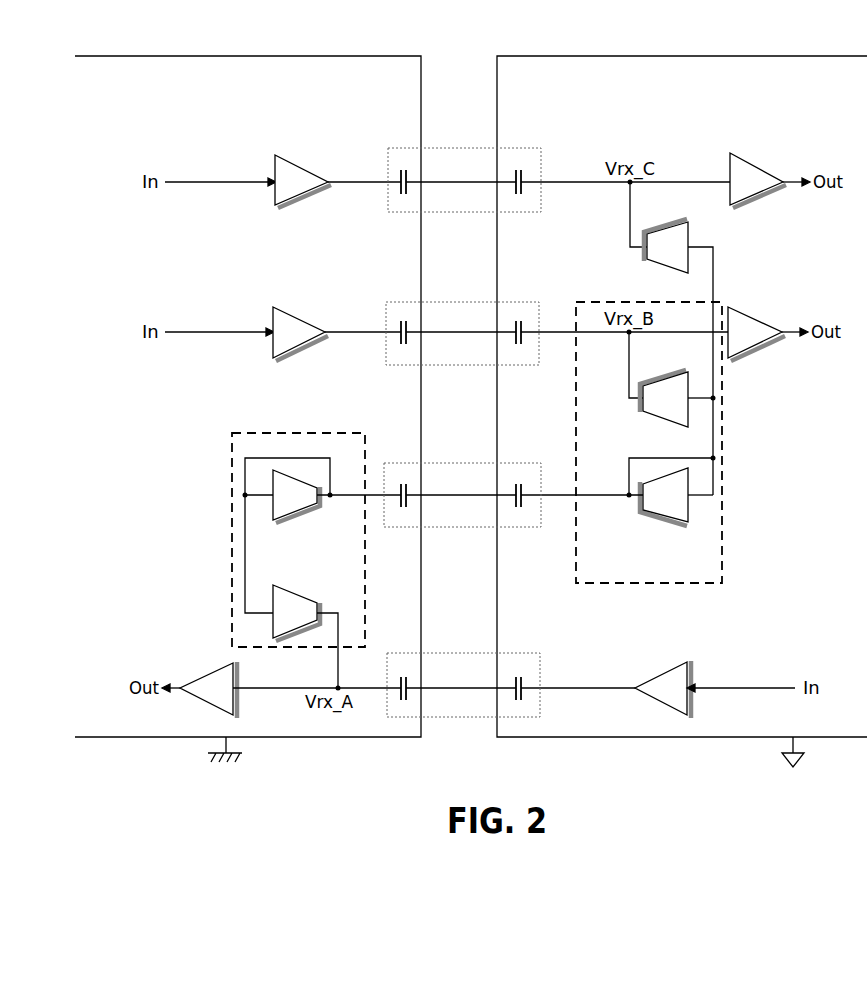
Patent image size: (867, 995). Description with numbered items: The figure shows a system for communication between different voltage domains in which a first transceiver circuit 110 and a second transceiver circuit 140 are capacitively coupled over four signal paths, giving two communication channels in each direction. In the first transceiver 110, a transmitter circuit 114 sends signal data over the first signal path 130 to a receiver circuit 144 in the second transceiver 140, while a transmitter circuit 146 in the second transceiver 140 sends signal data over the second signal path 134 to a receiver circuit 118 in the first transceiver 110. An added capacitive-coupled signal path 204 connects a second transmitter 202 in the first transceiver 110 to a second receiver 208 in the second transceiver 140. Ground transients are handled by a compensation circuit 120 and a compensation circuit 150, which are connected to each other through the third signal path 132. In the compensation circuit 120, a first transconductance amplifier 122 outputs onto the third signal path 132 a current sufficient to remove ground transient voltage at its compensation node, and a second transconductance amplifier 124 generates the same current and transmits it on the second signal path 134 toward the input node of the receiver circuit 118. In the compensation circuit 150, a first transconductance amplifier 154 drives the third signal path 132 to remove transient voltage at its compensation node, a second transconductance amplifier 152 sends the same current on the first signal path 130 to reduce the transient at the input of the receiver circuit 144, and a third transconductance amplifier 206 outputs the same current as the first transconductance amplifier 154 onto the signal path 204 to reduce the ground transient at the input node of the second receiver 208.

The first transceiver circuit 110 is at (247, 87).
The second transceiver circuit 140 is at (694, 87).
The second transmitter 202 is at (274, 208).
The signal path 204 is at (471, 148).
The third transconductance amplifier 206 is at (663, 268).
The second receiver 208 is at (754, 202).
The transmitter circuit 114 is at (274, 360).
The first signal path 130 is at (471, 302).
The third signal path 132 is at (471, 463).
The second signal path 134 is at (471, 653).
The receiver circuit 144 is at (754, 354).
The compensation circuit 150 is at (600, 583).
The second transconductance amplifier 152 is at (662, 427).
The first transconductance amplifier 154 is at (668, 522).
The compensation circuit 120 is at (233, 433).
The first transconductance amplifier 122 is at (296, 521).
The second transconductance amplifier 124 is at (284, 585).
The receiver circuit 118 is at (205, 672).
The transmitter circuit 146 is at (664, 668).